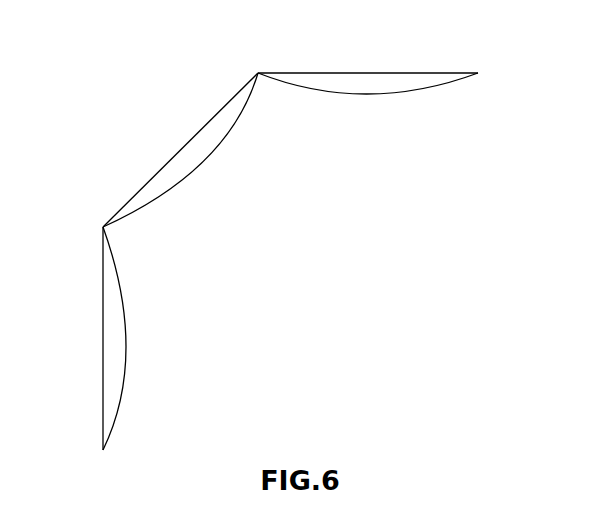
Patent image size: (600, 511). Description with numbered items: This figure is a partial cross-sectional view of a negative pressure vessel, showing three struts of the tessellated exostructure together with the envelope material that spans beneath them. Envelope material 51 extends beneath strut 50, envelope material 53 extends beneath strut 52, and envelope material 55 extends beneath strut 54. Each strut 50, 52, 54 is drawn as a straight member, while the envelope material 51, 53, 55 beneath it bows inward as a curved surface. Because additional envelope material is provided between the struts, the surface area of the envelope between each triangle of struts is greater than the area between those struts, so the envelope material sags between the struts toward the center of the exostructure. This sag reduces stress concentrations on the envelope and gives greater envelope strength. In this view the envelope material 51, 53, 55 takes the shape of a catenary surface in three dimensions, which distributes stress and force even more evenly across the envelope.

The strut 50 is at (100, 330).
The envelope material 51 is at (127, 348).
The strut 52 is at (188, 140).
The envelope material 53 is at (205, 158).
The strut 54 is at (388, 72).
The envelope material 55 is at (368, 95).